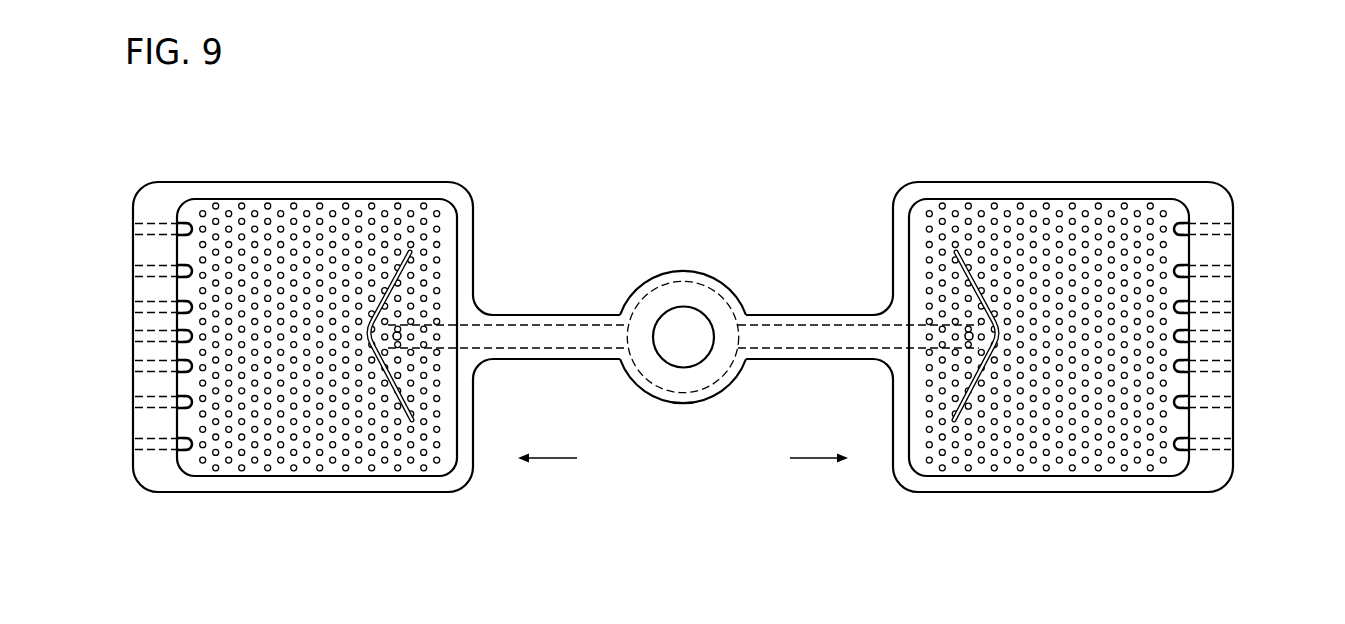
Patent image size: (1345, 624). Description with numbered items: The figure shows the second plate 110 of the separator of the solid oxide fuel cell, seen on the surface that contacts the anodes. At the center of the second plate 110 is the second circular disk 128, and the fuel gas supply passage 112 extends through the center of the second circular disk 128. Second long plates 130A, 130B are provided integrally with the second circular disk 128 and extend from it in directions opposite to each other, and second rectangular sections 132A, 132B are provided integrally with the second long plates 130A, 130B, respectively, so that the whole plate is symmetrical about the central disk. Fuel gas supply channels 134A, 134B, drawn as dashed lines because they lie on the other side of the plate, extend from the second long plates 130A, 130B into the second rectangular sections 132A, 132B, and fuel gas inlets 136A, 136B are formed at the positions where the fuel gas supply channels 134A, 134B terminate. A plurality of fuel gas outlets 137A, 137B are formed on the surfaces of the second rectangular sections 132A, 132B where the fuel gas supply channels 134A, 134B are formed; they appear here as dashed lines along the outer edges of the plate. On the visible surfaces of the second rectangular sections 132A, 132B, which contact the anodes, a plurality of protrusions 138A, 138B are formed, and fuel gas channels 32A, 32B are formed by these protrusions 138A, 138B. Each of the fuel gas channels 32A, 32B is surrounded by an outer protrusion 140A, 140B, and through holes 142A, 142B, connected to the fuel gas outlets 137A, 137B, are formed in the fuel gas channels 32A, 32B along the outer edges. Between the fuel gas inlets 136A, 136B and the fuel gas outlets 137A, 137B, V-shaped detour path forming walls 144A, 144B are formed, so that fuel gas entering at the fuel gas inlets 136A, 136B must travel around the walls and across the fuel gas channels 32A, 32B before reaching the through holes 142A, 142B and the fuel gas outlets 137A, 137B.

The second plate 110 is at (270, 125).
The fuel gas supply passage 112 is at (682, 317).
The second circular disk 128 is at (688, 400).
The second long plate 130A is at (780, 315).
The second long plate 130B is at (565, 315).
The second rectangular section 132A is at (1214, 488).
The second rectangular section 132B is at (152, 488).
The fuel gas supply channel 134A is at (810, 335).
The fuel gas supply channel 134B is at (529, 335).
The fuel gas inlet 136A is at (966, 333).
The fuel gas inlet 136B is at (400, 333).
The fuel gas outlets 137A is at (1233, 270).
The fuel gas outlets 137B is at (133, 270).
The protrusions 138A is at (1123, 464).
The protrusions 138B is at (281, 464).
The fuel gas channel 32A is at (1046, 371).
The fuel gas channel 32B is at (320, 371).
The outer protrusion 140A is at (960, 483).
The outer protrusion 140B is at (408, 483).
The through holes 142A is at (1183, 445).
The through holes 142B is at (183, 445).
The V-shaped detour path forming wall 144A is at (985, 297).
The V-shaped detour path forming wall 144B is at (382, 297).